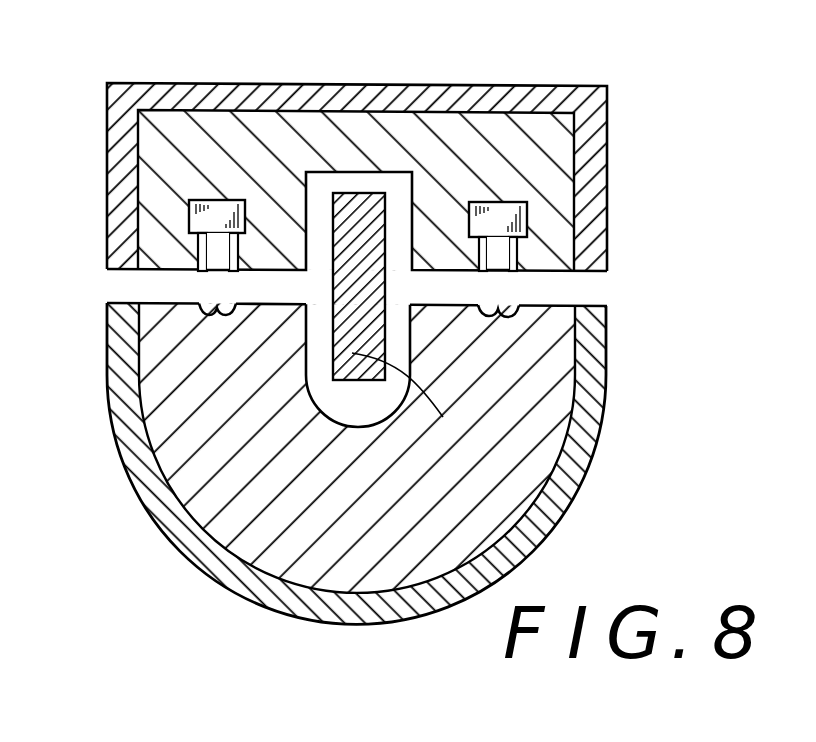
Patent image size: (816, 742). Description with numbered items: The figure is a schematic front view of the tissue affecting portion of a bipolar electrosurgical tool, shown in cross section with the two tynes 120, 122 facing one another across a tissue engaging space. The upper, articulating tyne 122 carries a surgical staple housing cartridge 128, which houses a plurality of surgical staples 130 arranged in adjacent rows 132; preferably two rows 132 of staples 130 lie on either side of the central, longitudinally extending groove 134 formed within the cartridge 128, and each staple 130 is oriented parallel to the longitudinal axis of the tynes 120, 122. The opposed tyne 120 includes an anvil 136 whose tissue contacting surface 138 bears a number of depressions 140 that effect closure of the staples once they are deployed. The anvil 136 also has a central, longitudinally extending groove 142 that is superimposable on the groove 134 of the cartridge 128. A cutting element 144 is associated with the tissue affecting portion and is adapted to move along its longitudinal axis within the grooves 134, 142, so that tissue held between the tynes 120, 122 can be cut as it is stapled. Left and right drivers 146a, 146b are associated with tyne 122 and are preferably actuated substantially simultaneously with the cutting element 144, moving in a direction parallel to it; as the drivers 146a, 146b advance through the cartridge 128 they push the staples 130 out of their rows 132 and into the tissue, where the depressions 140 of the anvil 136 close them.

The tyne 120 is at (593, 390).
The tyne 122 is at (598, 118).
The surgical staple housing cartridge 128 is at (532, 140).
The surgical staples 130 is at (240, 247).
The rows 132 is at (190, 250).
The longitudinally extending groove 134 is at (323, 180).
The anvil 136 is at (537, 428).
The tissue contacting surface 138 is at (553, 305).
The depressions 140 is at (207, 307).
The longitudinally extending groove 142 is at (318, 368).
The cutting element 144 is at (443, 417).
The left driver 146a is at (218, 212).
The right driver 146b is at (498, 213).